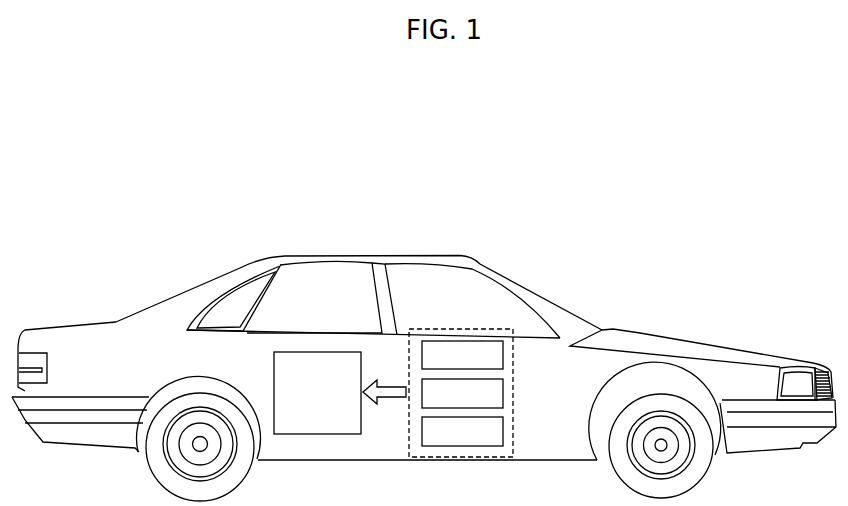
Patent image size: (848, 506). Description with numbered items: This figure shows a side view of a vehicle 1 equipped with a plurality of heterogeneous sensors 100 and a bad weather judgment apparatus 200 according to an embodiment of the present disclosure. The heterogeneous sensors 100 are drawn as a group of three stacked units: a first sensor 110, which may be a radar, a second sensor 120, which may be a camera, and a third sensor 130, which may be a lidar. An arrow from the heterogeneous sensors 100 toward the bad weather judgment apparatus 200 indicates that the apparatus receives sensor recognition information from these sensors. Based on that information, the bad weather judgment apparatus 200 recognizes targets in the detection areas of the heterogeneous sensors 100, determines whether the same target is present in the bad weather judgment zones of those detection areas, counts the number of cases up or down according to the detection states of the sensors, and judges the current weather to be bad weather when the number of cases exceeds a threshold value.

The vehicle 1 is at (320, 255).
The heterogeneous sensors 100 is at (489, 328).
The first sensor 110 is at (503, 355).
The second sensor 120 is at (503, 393).
The third sensor 130 is at (503, 431).
The bad weather judgment apparatus 200 is at (347, 349).